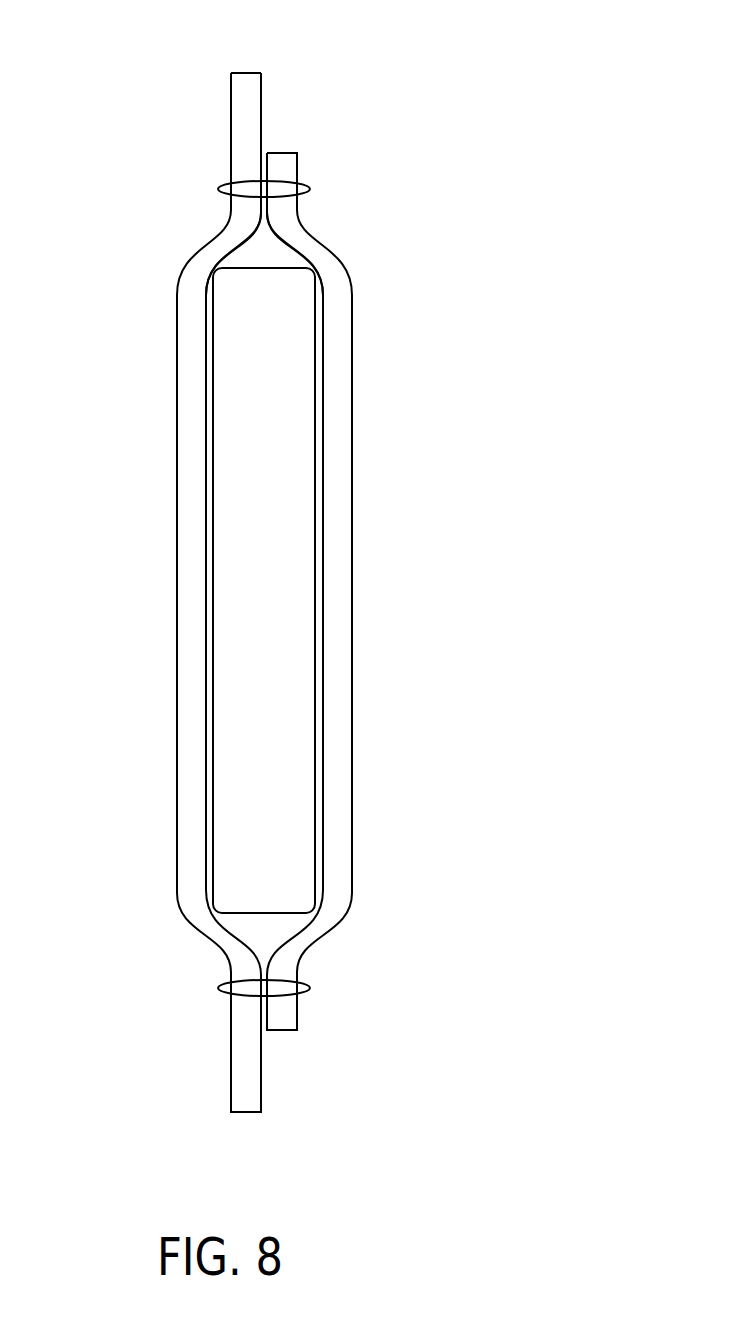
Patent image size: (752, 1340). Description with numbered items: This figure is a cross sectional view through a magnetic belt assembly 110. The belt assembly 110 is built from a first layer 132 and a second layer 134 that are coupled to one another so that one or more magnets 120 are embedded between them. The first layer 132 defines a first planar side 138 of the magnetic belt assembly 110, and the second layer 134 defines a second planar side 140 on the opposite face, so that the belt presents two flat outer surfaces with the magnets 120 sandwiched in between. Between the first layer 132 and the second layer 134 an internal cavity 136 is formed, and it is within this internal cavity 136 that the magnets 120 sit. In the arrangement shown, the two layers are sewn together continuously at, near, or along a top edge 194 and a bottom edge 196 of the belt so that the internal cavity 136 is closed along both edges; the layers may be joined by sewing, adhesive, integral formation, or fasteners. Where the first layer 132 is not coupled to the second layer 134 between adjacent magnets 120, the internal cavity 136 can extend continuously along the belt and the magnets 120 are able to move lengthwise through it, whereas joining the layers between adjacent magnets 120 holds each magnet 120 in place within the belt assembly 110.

The magnetic belt assembly 110 is at (349, 89).
The magnets 120 is at (268, 793).
The first layer 132 is at (177, 458).
The second layer 134 is at (339, 492).
The internal cavity 136 is at (278, 256).
The first planar side 138 is at (177, 695).
The second planar side 140 is at (353, 627).
The top edge 194 is at (210, 189).
The bottom edge 196 is at (316, 988).